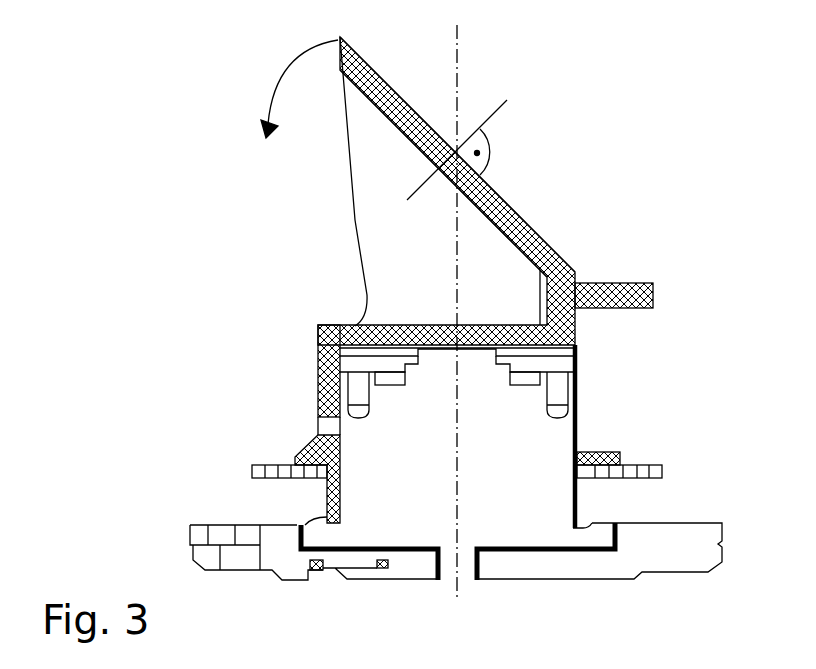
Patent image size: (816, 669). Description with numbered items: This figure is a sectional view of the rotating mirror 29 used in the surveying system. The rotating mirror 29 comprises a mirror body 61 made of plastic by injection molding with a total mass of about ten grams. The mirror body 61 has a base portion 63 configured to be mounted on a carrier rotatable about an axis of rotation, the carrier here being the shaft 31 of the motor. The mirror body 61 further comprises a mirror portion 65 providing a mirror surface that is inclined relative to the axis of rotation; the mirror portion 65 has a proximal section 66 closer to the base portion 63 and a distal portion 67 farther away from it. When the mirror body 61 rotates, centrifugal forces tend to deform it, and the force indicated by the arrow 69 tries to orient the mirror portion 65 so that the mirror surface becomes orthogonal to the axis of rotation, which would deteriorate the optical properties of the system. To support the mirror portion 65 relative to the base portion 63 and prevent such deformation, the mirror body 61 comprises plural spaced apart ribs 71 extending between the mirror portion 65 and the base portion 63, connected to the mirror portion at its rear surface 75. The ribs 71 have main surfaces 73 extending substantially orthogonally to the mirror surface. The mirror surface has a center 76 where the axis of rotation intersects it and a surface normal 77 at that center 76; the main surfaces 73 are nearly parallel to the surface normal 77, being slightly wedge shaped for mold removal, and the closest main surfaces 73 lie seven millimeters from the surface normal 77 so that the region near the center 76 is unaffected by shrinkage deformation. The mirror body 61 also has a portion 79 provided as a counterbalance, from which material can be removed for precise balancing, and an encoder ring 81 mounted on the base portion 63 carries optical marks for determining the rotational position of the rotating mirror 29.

The rotating mirror 29 is at (590, 130).
The shaft 31 is at (578, 431).
The mirror body 61 is at (673, 243).
The base portion 63 is at (318, 392).
The mirror portion 65 is at (488, 224).
The proximal section 66 is at (528, 258).
The distal portion 67 is at (373, 108).
The arrow 69 is at (292, 88).
The ribs 71 is at (355, 222).
The main surfaces 73 is at (393, 191).
The rear surface 75 is at (358, 103).
The center 76 is at (457, 141).
The surface normal 77 is at (520, 84).
The counterbalance 79 is at (627, 310).
The encoder ring 81 is at (645, 478).